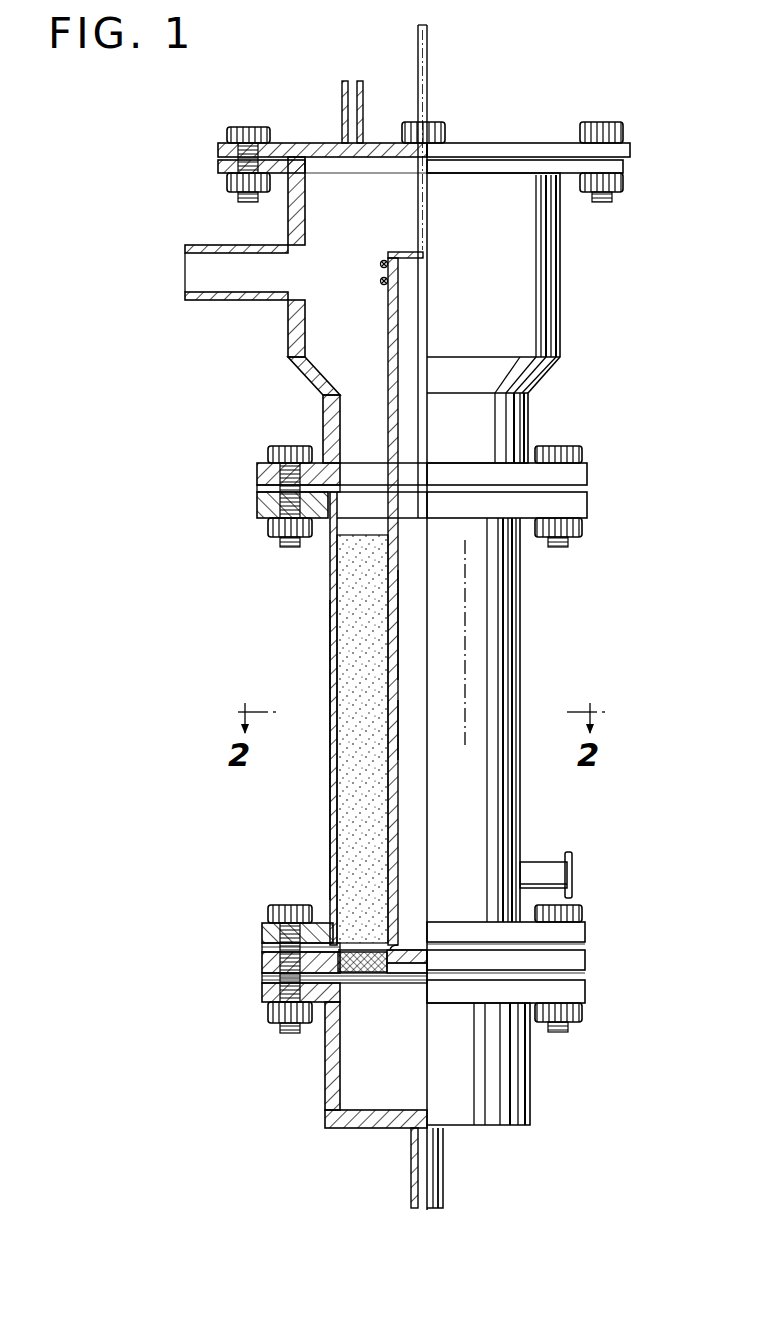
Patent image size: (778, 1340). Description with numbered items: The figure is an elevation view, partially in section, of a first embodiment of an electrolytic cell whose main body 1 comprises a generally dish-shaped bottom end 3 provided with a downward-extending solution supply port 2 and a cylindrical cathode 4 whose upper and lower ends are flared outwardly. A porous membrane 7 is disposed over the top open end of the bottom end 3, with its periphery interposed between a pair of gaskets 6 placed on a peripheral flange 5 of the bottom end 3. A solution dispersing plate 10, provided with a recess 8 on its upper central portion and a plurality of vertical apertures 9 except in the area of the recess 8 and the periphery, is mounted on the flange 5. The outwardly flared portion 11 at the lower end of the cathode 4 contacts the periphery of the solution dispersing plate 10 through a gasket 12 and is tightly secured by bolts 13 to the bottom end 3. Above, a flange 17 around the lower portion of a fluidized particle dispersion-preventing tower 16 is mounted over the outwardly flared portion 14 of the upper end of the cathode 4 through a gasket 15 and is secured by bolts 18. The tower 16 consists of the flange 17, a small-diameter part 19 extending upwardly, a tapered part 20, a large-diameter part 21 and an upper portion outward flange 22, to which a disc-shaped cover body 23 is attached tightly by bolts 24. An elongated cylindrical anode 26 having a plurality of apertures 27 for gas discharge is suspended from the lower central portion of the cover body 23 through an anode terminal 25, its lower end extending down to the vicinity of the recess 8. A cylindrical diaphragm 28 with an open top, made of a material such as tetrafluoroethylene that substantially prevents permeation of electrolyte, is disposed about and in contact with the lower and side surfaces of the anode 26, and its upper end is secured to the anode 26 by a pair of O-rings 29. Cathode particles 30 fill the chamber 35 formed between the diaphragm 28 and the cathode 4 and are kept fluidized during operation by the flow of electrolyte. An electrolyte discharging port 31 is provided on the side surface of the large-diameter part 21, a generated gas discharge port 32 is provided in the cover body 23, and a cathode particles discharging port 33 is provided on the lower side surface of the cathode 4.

The electrolytic cell main body 1 is at (320, 583).
The solution supply port 2 is at (412, 1158).
The bottom end 3 is at (325, 1096).
The cylindrical cathode 4 is at (328, 673).
The peripheral flange 5 is at (318, 1003).
The gaskets 6 is at (262, 976).
The porous membrane 7 is at (392, 974).
The recess 8 is at (410, 965).
The vertical apertures 9 is at (364, 975).
The solution dispersing plate 10 is at (500, 975).
The outwardly flared portion 11 is at (262, 946).
The gasket 12 is at (322, 924).
The bolts 13 is at (270, 908).
The outwardly flared portion 14 is at (258, 504).
The gasket 15 is at (258, 474).
The fluidized particle dispersion-preventing tower 16 is at (565, 275).
The flange 17 is at (268, 452).
The bolts 18 is at (268, 527).
The small-diameter part 19 is at (330, 420).
The tapered part 20 is at (305, 378).
The large-diameter part 21 is at (288, 322).
The upper portion outward flange 22 is at (275, 180).
The cover body 23 is at (290, 143).
The bolts 24 is at (258, 130).
The anode terminal 25 is at (430, 93).
The elongated cylindrical anode 26 is at (398, 552).
The apertures 27 is at (398, 573).
The cylindrical diaphragm 28 is at (432, 678).
The O-rings 29 is at (380, 263).
The cathode particles 30 is at (345, 631).
The electrolyte discharging port 31 is at (203, 256).
The generated gas discharge port 32 is at (388, 82).
The cathode particles discharging port 33 is at (543, 870).
The chamber 35 is at (330, 752).